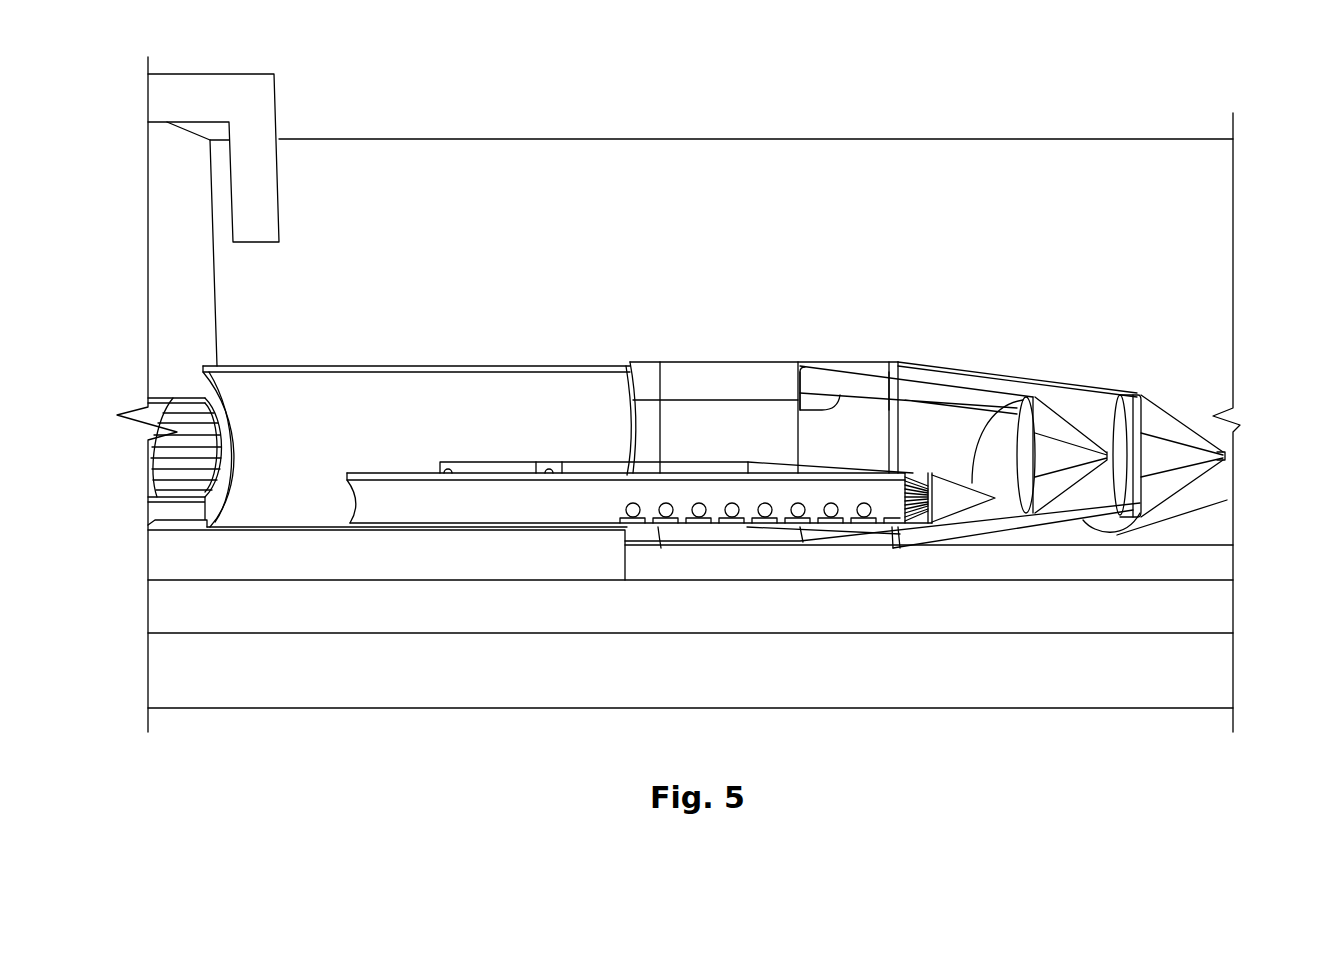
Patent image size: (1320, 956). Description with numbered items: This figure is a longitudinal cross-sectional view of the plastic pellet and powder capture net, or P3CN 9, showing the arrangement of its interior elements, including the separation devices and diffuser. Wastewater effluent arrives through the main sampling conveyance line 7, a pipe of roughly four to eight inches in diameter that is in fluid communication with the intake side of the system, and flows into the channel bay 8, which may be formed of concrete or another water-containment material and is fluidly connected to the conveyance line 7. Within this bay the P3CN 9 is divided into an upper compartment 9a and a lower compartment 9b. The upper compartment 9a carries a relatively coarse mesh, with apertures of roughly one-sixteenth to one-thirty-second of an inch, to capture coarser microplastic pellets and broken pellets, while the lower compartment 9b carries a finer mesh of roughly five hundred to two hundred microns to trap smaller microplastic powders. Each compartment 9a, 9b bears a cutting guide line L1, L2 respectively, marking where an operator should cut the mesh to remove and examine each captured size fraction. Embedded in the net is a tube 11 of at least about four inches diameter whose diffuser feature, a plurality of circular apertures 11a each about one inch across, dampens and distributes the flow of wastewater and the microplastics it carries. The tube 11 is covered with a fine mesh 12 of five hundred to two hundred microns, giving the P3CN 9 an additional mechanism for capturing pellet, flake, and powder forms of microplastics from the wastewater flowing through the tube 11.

The main sampling conveyance line 7 is at (180, 393).
The channel bay 8 is at (287, 710).
The plastic pellet, and powder capture net (P3CN) 9 is at (718, 358).
The upper compartment 9a is at (1003, 387).
The lower compartment 9b is at (1203, 481).
The tube 11 is at (848, 487).
The circular apertures 11a is at (765, 503).
The mesh 12 is at (1030, 400).
The cutting guide line L1 is at (805, 408).
The cutting guide line L2 is at (905, 412).